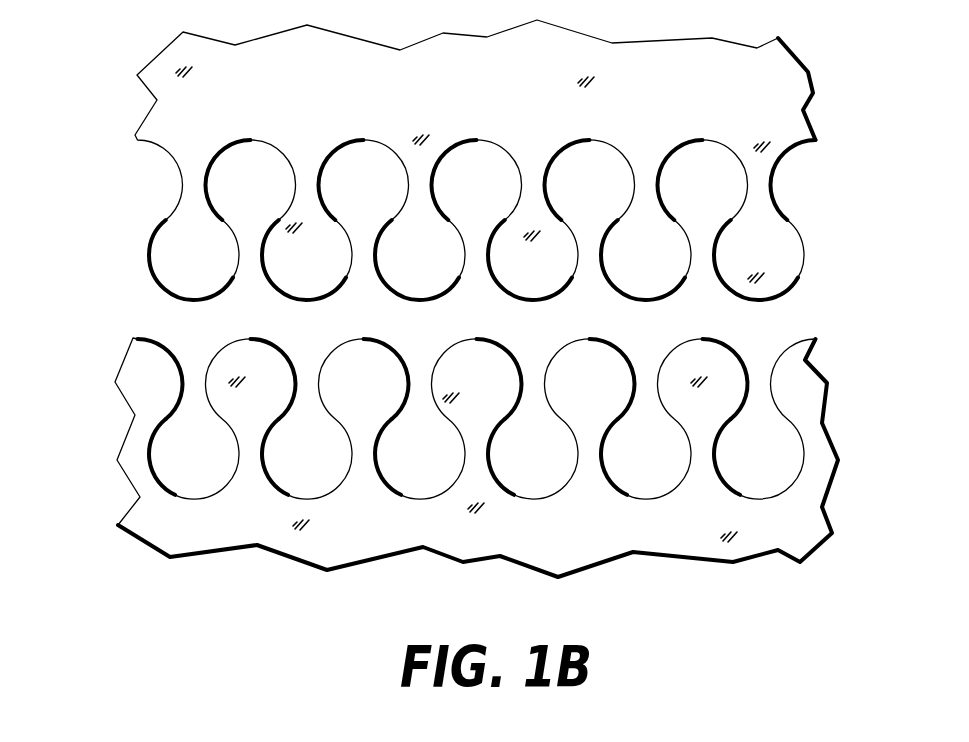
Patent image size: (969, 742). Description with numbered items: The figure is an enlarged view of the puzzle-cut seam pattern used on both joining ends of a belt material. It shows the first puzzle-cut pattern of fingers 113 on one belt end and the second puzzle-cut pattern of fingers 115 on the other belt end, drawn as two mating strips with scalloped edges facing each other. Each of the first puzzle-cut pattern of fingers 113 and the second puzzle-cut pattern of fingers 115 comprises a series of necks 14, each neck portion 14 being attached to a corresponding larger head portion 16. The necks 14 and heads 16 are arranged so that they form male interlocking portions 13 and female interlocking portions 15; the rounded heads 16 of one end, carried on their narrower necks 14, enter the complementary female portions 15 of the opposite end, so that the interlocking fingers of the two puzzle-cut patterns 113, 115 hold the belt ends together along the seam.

The male interlocking portion 13 is at (467, 347).
The neck portion 14 is at (747, 187).
The female interlocking portion 15 is at (483, 160).
The head portion 16 is at (808, 258).
The first puzzle-cut pattern of fingers 113 is at (120, 235).
The second puzzle-cut pattern of fingers 115 is at (102, 442).